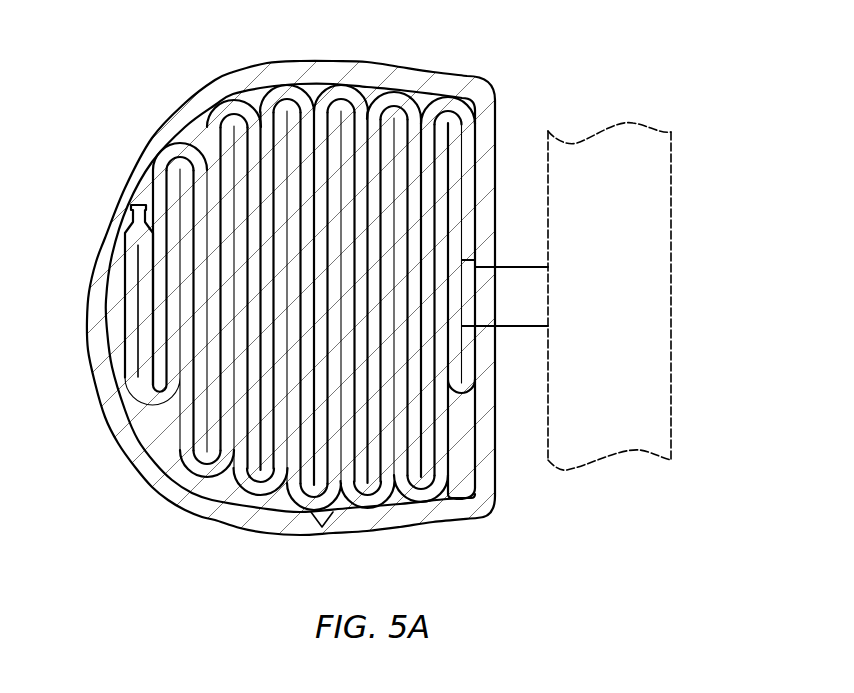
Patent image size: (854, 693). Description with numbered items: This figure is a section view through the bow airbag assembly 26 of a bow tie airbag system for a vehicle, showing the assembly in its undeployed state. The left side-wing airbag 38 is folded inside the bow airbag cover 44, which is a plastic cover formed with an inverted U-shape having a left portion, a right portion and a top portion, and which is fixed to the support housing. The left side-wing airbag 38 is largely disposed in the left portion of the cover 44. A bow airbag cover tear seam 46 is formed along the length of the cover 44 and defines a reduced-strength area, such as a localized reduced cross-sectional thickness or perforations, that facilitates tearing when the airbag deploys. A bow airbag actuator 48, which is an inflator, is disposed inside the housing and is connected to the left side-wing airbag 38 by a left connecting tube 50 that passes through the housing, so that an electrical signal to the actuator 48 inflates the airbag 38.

The bow airbag assembly 26 is at (126, 472).
The left side-wing airbag 38 is at (150, 192).
The bow airbag cover 44 is at (360, 61).
The bow airbag cover tear seam 46 is at (333, 527).
The bow airbag actuator 48 is at (671, 188).
The left connecting tube 50 is at (515, 266).